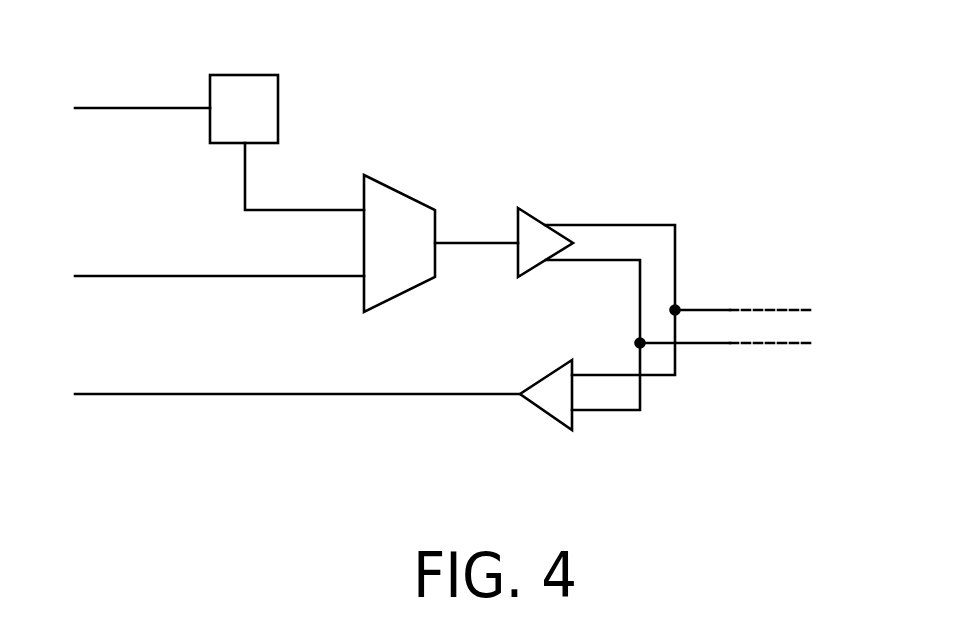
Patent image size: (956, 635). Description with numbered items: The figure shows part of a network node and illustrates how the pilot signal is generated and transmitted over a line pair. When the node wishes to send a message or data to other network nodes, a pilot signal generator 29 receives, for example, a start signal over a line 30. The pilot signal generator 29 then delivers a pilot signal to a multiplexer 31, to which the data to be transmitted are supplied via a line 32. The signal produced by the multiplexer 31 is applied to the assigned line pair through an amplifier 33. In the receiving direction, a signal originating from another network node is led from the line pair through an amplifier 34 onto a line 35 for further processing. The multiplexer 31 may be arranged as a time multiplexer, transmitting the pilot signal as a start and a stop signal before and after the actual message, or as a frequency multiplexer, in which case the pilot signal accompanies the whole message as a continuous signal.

The pilot signal generator 29 is at (262, 90).
The line 30 is at (100, 108).
The multiplexer 31 is at (397, 216).
The line 32 is at (98, 276).
The amplifier 33 is at (525, 267).
The amplifier 34 is at (555, 397).
The line 35 is at (167, 394).